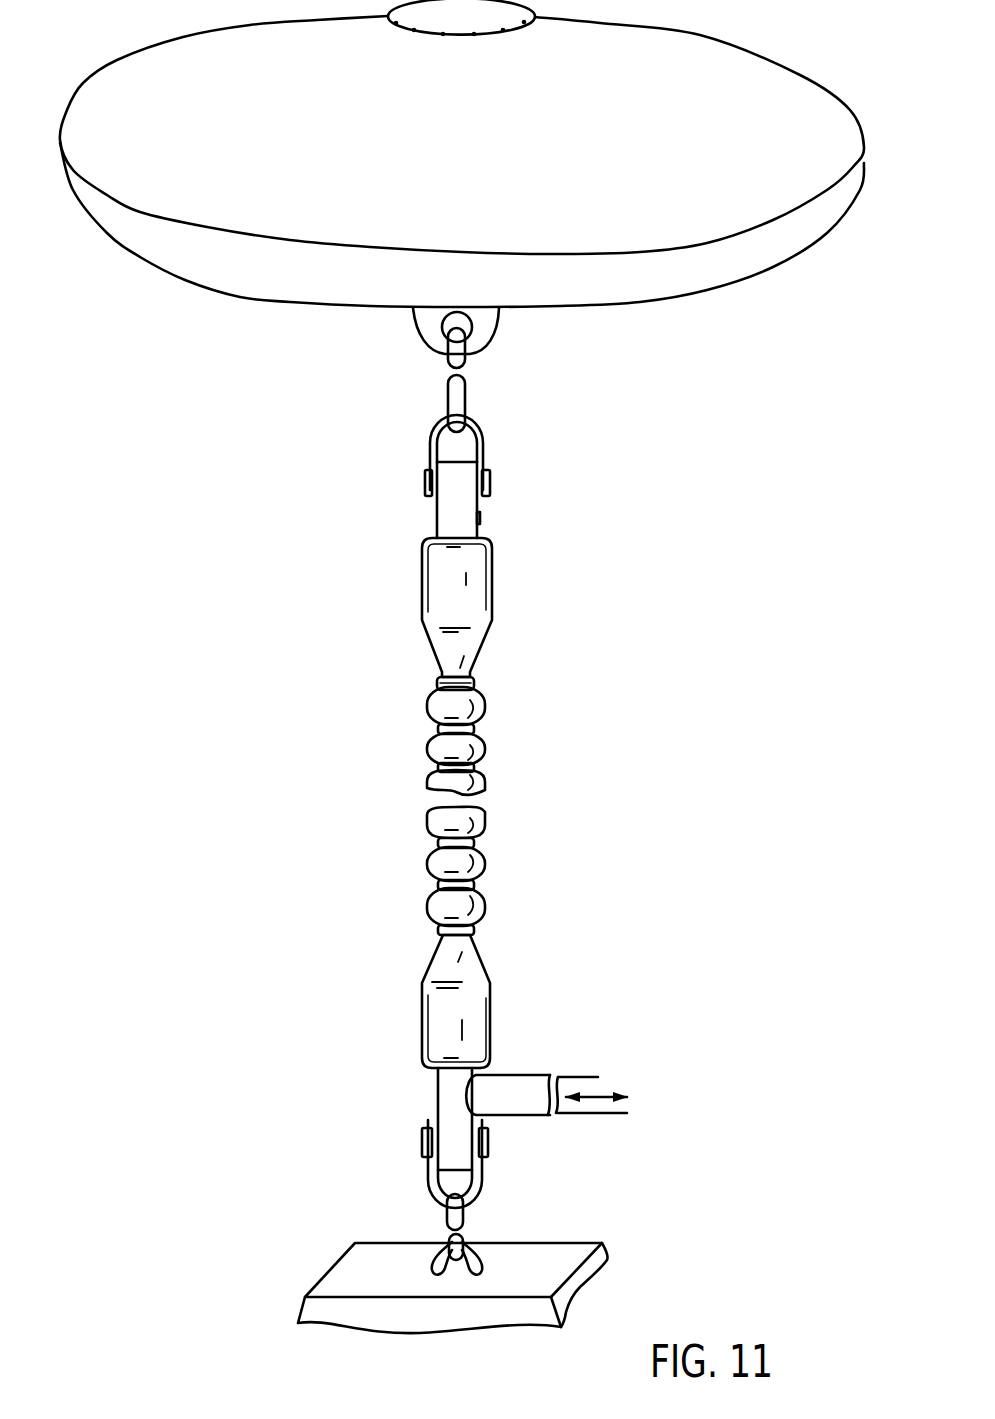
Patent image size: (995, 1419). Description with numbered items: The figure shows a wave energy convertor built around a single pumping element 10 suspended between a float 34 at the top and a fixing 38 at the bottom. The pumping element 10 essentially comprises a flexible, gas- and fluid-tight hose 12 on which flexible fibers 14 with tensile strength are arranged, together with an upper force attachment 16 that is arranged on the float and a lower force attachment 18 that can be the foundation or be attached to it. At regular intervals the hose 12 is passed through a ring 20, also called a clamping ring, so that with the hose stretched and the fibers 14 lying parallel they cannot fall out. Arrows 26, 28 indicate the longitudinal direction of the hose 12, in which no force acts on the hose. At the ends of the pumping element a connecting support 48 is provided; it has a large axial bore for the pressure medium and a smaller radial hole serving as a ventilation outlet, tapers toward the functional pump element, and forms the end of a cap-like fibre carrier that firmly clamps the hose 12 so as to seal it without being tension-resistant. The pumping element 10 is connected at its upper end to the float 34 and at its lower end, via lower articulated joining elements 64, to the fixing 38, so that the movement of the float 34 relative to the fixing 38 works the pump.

The pumping element 10 is at (464, 791).
The hose 12 is at (396, 402).
The fibers 14 is at (477, 745).
The upper force attachment 16 is at (467, 598).
The lower force attachment 18 is at (455, 1030).
The ring 20 is at (473, 683).
The arrow 26 is at (574, 1077).
The arrow 28 is at (597, 1097).
The float 34 is at (213, 212).
The fixing 38 is at (598, 1264).
The connecting support 48 is at (453, 513).
The lower articulated joining elements 64 is at (421, 1217).